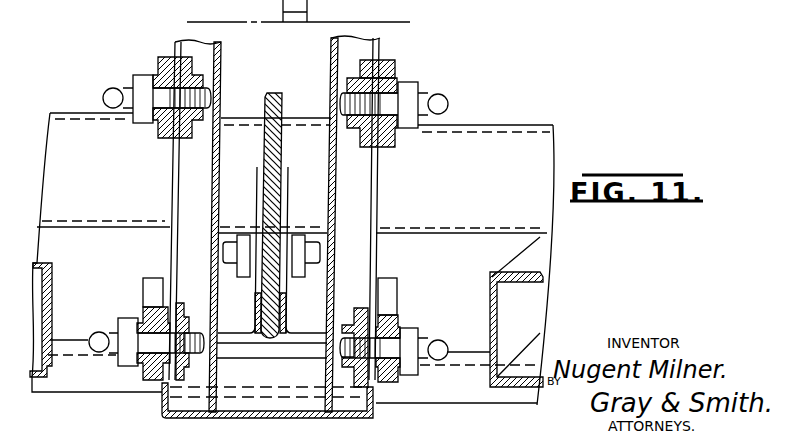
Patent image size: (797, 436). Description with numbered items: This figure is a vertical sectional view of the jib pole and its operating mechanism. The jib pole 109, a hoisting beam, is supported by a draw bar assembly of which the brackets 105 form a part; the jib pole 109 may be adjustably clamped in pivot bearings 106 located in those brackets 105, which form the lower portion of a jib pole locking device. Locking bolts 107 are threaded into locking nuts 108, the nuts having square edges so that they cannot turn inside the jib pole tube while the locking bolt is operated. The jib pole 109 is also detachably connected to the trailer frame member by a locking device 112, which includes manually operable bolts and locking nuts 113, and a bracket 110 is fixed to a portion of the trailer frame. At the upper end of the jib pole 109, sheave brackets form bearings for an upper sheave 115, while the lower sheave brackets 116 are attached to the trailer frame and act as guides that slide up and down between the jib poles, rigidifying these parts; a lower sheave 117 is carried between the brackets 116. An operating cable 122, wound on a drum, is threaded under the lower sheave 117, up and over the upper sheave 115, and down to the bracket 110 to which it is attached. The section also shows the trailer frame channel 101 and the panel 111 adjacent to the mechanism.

The channel member 101 is at (540, 262).
The brackets 105 is at (150, 276).
The pivot bearings 106 is at (161, 388).
The locking bolts 107 is at (118, 363).
The locking nuts 108 is at (380, 41).
The jib pole 109 is at (221, 72).
The bracket 110 is at (169, 56).
The panel 111 is at (507, 127).
The locking device 112 is at (134, 77).
The locking nuts 113 is at (388, 58).
The upper sheave 115 is at (216, 44).
The lower sheave brackets 116 is at (239, 220).
The lower sheave 117 is at (287, 167).
The operating cable 122 is at (277, 97).